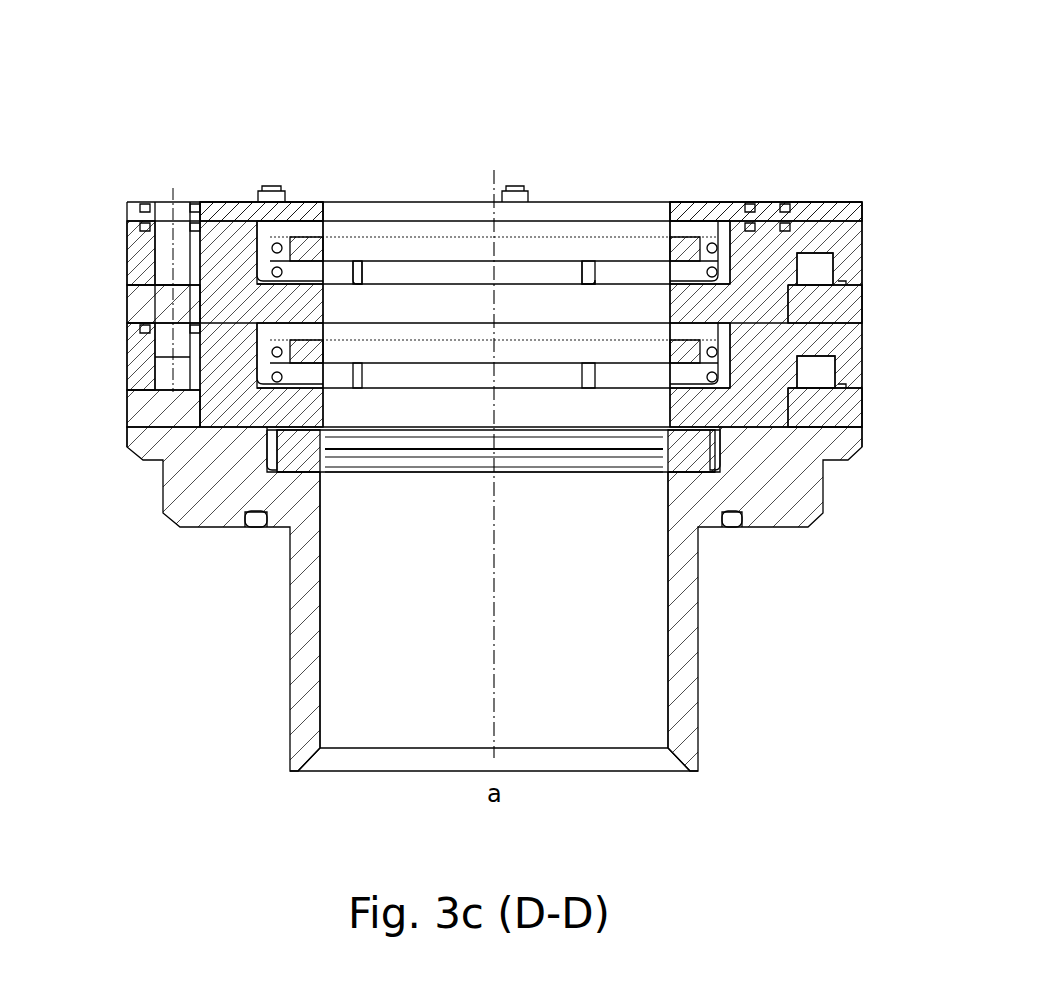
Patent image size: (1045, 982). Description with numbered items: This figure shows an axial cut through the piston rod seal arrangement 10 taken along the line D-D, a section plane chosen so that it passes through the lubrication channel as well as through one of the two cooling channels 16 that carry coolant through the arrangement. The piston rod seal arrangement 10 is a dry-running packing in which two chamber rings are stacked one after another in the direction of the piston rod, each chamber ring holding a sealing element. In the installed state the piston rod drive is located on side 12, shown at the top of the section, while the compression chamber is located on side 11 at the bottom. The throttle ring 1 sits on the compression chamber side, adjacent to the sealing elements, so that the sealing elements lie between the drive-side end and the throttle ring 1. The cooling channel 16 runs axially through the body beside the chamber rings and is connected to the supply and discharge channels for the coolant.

The piston rod seal arrangement 10 is at (274, 100).
The cooling channel 16 is at (163, 198).
The side 12 is at (508, 157).
The throttle ring 1 is at (695, 450).
The side 11 is at (506, 843).